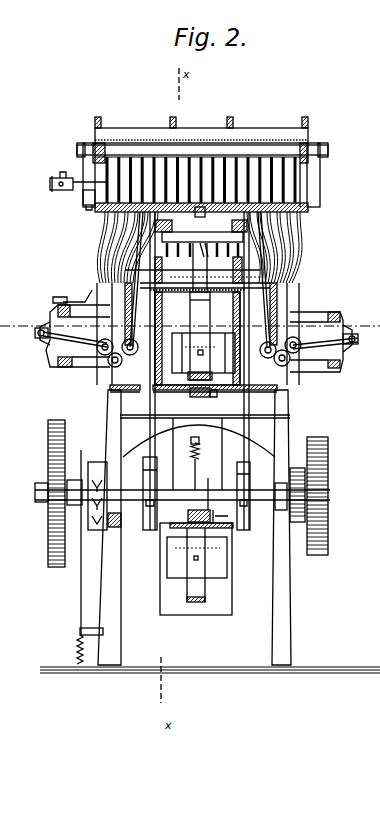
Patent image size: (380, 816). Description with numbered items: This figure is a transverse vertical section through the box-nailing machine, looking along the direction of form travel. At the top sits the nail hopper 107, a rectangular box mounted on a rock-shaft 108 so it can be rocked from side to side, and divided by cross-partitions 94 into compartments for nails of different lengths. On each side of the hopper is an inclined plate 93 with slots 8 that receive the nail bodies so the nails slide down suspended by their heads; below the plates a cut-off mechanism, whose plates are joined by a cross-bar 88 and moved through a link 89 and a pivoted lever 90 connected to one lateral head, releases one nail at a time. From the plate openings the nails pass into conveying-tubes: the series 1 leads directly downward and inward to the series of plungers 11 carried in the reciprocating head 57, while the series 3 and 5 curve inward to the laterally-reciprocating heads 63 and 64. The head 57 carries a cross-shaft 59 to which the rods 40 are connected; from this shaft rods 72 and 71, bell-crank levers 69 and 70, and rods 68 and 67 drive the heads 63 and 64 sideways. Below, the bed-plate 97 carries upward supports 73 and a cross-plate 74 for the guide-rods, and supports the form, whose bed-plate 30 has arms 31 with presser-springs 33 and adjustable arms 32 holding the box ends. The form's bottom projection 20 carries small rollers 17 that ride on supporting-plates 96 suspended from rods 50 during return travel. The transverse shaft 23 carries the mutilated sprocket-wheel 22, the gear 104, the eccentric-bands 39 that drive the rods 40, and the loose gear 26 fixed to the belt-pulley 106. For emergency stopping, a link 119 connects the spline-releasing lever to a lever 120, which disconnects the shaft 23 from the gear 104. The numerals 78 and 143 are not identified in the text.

The cross-partitions 94 is at (177, 117).
The hopper 107 is at (214, 130).
The rock-shaft 108 is at (329, 152).
The inclined plates 93 is at (308, 182).
The slots 8 is at (201, 184).
The cross-bar 88 is at (62, 178).
The link 89 is at (84, 198).
The cross-shaft 59 is at (197, 210).
The reciprocating head 57 is at (201, 231).
The pivoted lever 90 is at (102, 240).
The series of conveying-tubes 3 is at (106, 254).
The series of conveying-tubes 5 is at (298, 255).
The series of plungers 11 is at (202, 250).
The series of conveying-tubes 1 is at (198, 266).
The rod 72 is at (160, 272).
The rod 71 is at (256, 272).
The plates or supports 73 is at (205, 334).
The cross-plate 74 is at (200, 297).
The plate 78 is at (203, 341).
The presser-springs 33 is at (200, 351).
The arms or brackets 31 is at (211, 345).
The rods 40 is at (251, 416).
The laterally-reciprocating head 63 is at (58, 310).
The laterally-reciprocating head 64 is at (340, 309).
The rod 68 is at (70, 333).
The rod 67 is at (330, 342).
The bell-crank lever 69 is at (267, 358).
The bell-crank lever 70 is at (122, 362).
The bed-plate 97 is at (193, 395).
The projections 20 is at (199, 455).
The small rollers 17 is at (211, 396).
The rods 50 is at (175, 430).
The spring 143 is at (199, 446).
The transverse shaft 23 is at (262, 486).
The gear 104 is at (48, 452).
The mutilated sprocket-wheel 22 is at (96, 462).
The eccentric-bands 39 is at (144, 527).
The supporting-plates 96 is at (225, 514).
The gear 26 is at (297, 488).
The belt-pulley 106 is at (328, 463).
The bed-plate 30 is at (196, 569).
The arms or brackets 32 is at (197, 571).
The link 119 is at (81, 589).
The lever 120 is at (80, 631).